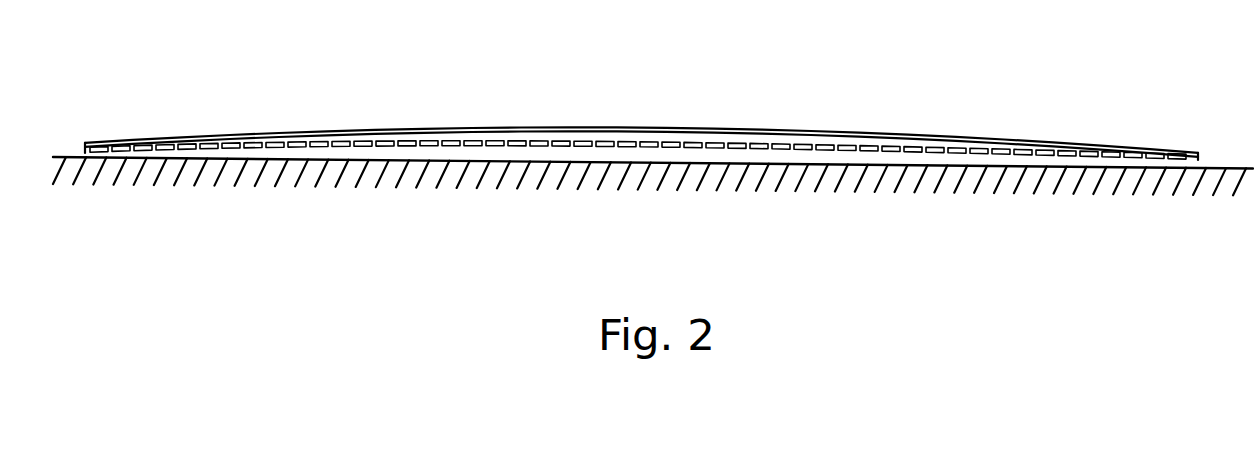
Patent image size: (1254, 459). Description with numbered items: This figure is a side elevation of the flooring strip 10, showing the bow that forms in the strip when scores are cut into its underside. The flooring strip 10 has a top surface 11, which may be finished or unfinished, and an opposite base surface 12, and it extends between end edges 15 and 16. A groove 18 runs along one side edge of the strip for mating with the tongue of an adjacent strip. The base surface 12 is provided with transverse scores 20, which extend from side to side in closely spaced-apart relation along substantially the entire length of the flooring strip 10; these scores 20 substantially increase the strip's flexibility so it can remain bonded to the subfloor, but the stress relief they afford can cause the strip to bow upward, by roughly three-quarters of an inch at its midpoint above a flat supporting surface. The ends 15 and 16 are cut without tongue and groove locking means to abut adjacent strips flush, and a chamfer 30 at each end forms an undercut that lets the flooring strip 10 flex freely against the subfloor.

The flooring strip 10 is at (637, 129).
The top surface 11 is at (475, 128).
The base surface 12 is at (638, 194).
The end edge 15 is at (1198, 165).
The end edge 16 is at (85, 150).
The groove 18 is at (935, 140).
The transverse scores 20 is at (148, 150).
The chamfer 30 is at (64, 160).